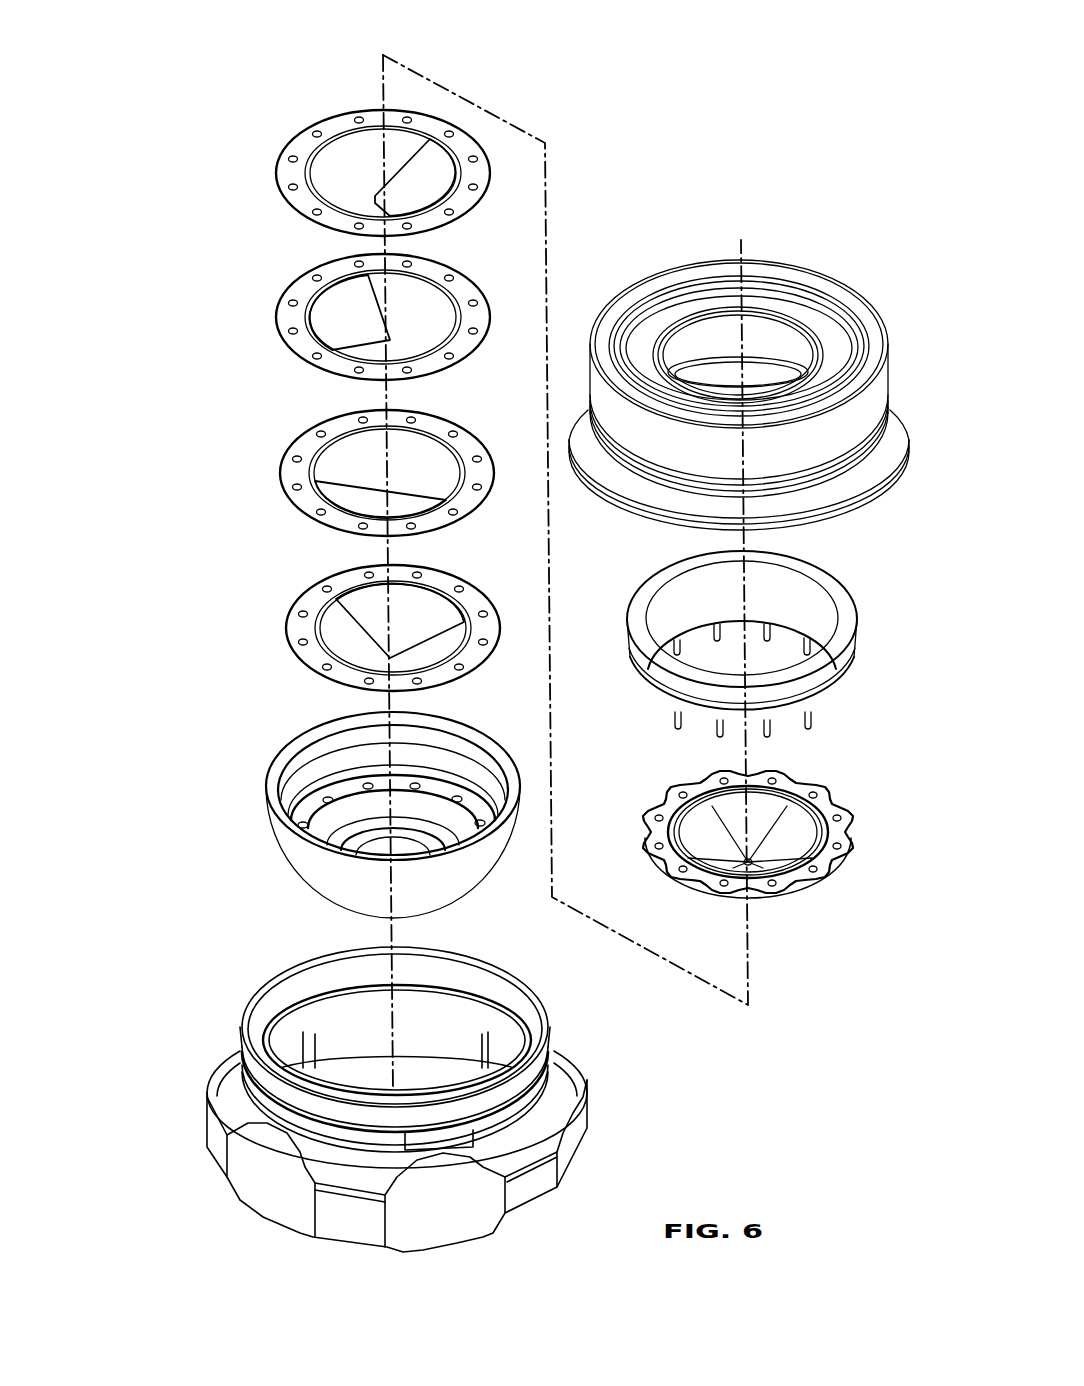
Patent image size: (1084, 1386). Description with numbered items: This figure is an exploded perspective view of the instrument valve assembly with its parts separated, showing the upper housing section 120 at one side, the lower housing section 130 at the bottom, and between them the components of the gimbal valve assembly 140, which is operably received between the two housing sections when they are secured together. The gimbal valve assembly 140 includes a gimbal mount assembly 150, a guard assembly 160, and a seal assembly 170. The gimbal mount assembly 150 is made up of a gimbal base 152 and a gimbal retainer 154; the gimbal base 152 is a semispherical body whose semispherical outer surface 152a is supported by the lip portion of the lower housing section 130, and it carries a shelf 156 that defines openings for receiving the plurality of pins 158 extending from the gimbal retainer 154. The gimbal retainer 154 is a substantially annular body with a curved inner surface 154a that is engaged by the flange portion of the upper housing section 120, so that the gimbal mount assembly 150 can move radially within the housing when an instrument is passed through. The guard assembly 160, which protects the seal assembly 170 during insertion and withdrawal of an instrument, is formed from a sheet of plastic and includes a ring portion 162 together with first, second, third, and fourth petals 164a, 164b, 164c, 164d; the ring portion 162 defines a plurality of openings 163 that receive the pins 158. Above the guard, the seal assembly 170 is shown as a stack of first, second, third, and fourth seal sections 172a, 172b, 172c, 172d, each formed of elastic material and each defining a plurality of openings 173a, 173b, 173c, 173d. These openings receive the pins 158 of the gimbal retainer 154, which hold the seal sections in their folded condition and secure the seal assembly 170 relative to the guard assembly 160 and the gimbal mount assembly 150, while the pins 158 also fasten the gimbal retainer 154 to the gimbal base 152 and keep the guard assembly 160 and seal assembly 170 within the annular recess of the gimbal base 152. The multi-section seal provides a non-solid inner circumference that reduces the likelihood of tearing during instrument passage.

The upper housing section 120 is at (903, 333).
The lower housing section 130 is at (180, 1118).
The gimbal valve assembly 140 is at (92, 310).
The gimbal mount assembly 150 is at (630, 518).
The gimbal base 152 is at (280, 752).
The semispherical outer surface 152a is at (298, 860).
The gimbal retainer 154 is at (643, 695).
The curved inner surface 154a is at (795, 605).
The shelf 156 is at (300, 812).
The pins 158 is at (768, 723).
The guard assembly 160 is at (880, 777).
The ring portion 162 is at (845, 830).
The openings 163 is at (816, 862).
The first petal 164a is at (838, 800).
The second petal 164b is at (656, 806).
The third petal 164c is at (698, 890).
The fourth petal 164d is at (843, 870).
The seal assembly 170 is at (267, 200).
The first seal section 172a is at (483, 135).
The second seal section 172b is at (470, 280).
The third seal section 172c is at (285, 502).
The fourth seal section 172d is at (280, 643).
The openings 173a is at (356, 120).
The openings 173b is at (317, 355).
The openings 173c is at (458, 438).
The openings 173d is at (481, 613).